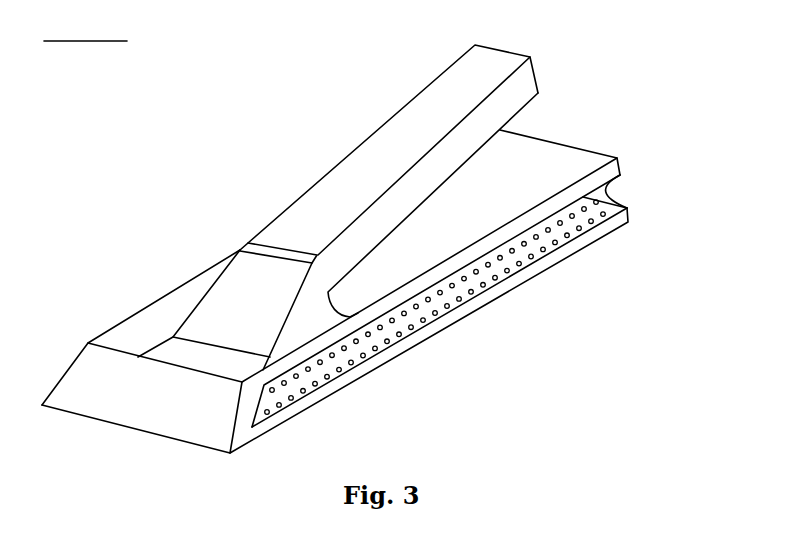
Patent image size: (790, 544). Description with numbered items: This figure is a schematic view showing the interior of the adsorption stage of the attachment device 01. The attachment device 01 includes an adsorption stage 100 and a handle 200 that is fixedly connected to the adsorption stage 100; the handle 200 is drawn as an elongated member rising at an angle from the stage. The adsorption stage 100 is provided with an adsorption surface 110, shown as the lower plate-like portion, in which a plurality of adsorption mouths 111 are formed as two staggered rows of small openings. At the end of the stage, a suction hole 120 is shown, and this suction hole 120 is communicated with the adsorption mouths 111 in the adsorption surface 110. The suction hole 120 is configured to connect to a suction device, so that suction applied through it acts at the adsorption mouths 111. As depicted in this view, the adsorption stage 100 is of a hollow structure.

The attachment device 01 is at (85, 27).
The adsorption stage 100 is at (562, 145).
The adsorption surface 110 is at (523, 288).
The adsorption mouths 111 is at (558, 241).
The suction hole 120 is at (627, 182).
The handle 200 is at (503, 55).